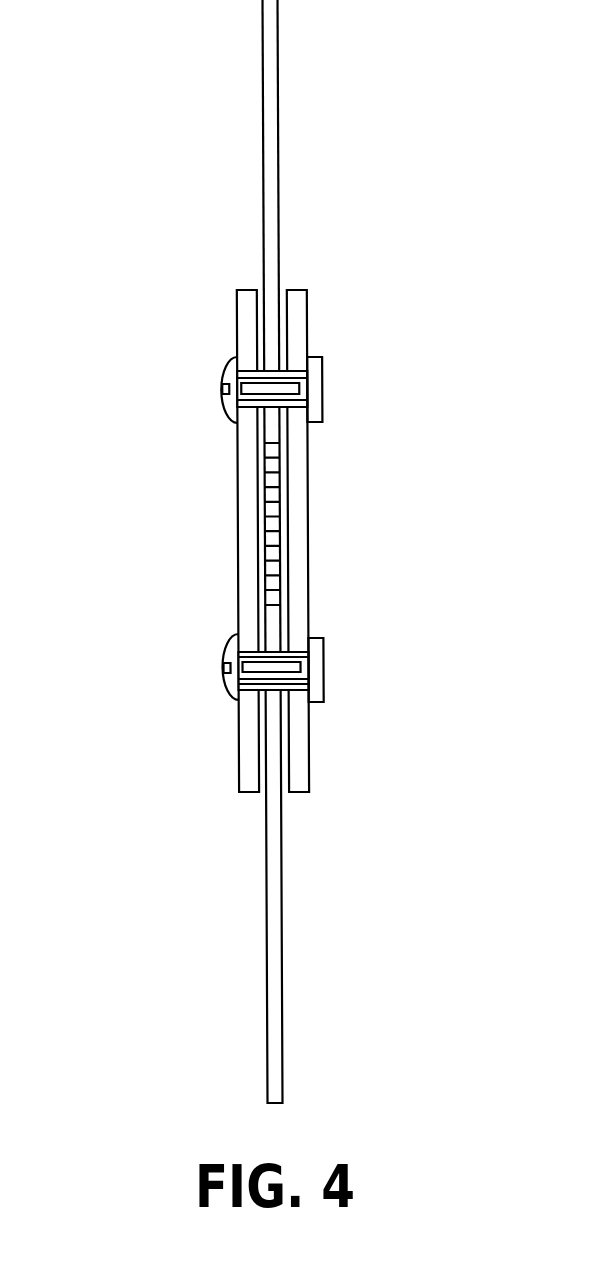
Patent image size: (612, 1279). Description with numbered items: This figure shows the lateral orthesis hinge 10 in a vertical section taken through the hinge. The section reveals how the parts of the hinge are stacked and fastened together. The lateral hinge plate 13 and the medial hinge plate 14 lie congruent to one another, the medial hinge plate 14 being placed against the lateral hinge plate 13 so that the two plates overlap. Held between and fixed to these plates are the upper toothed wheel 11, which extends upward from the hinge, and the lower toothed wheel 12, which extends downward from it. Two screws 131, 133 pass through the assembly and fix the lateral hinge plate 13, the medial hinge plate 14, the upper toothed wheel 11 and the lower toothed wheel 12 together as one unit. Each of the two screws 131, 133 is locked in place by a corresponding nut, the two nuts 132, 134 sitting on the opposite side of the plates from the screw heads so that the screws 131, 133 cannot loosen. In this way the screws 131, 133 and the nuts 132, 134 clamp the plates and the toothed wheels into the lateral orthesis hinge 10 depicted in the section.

The lateral orthesis hinge 10 is at (110, 906).
The upper toothed wheel 11 is at (268, 86).
The lower toothed wheel 12 is at (277, 873).
The lateral hinge plate 13 is at (250, 749).
The medial hinge plate 14 is at (300, 489).
The screw 131 is at (224, 667).
The nut 132 is at (317, 666).
The screw 133 is at (223, 388).
The nut 134 is at (316, 386).